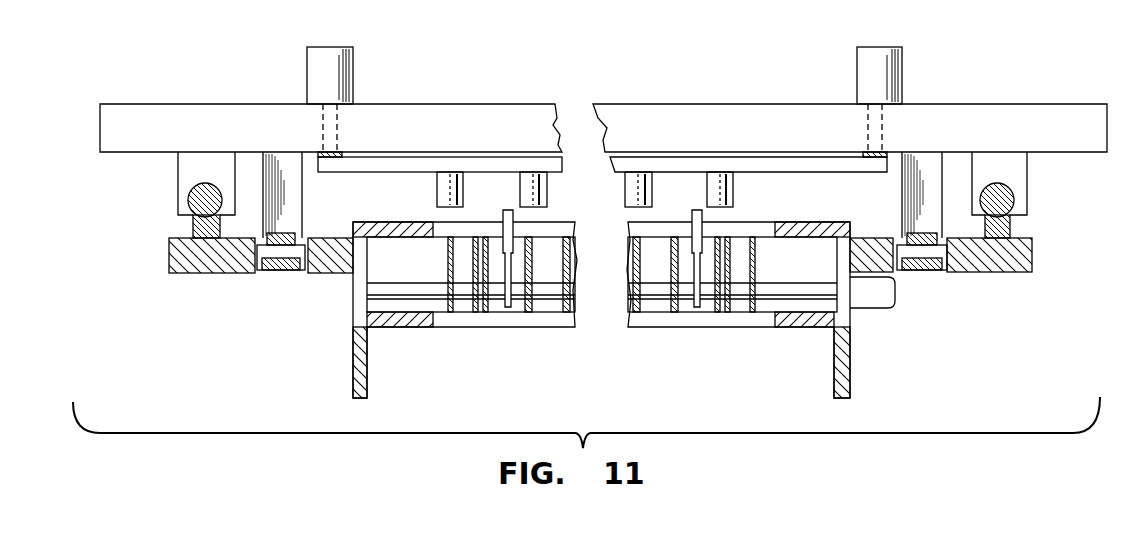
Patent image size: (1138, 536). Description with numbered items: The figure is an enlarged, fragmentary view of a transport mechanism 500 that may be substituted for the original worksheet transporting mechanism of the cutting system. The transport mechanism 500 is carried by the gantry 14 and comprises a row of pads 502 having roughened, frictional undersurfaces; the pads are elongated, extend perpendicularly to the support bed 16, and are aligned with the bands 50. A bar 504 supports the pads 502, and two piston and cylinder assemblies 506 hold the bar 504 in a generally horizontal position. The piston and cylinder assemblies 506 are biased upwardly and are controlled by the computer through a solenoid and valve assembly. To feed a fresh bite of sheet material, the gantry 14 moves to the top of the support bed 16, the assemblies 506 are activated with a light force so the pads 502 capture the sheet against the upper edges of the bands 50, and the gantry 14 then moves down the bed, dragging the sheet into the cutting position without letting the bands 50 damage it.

The gantry 14 is at (962, 122).
The support bed 16 is at (352, 292).
The bands 50 is at (527, 303).
The transport mechanism 500 is at (802, 175).
The pads 502 is at (722, 190).
The bar 504 is at (368, 162).
The piston and cylinder assemblies 506 is at (353, 80).